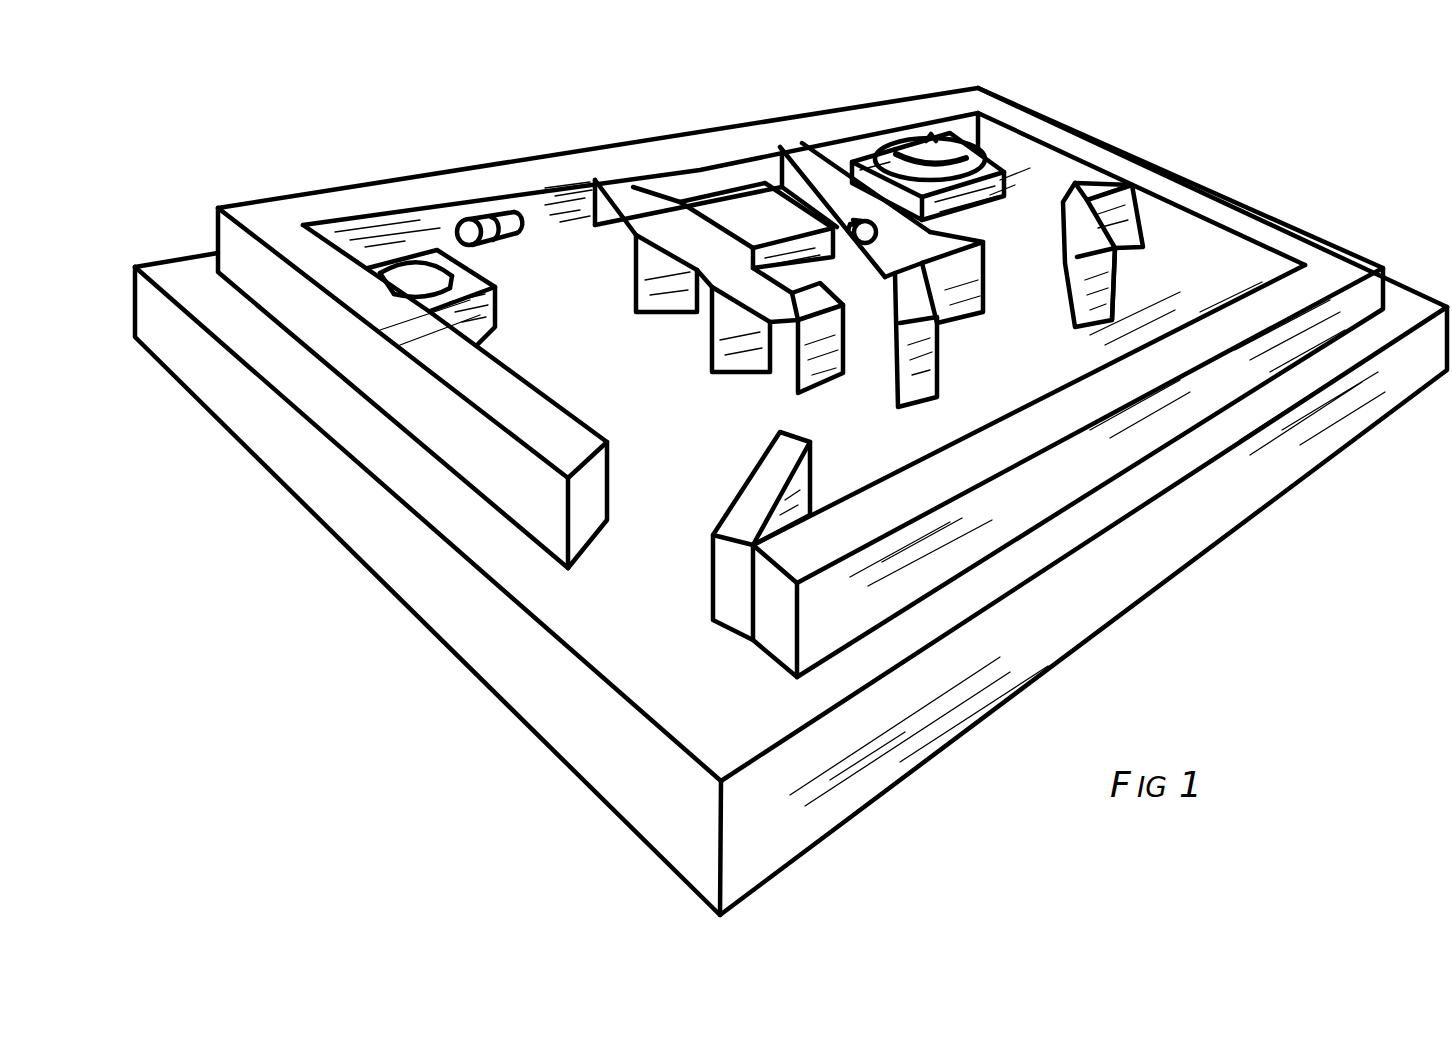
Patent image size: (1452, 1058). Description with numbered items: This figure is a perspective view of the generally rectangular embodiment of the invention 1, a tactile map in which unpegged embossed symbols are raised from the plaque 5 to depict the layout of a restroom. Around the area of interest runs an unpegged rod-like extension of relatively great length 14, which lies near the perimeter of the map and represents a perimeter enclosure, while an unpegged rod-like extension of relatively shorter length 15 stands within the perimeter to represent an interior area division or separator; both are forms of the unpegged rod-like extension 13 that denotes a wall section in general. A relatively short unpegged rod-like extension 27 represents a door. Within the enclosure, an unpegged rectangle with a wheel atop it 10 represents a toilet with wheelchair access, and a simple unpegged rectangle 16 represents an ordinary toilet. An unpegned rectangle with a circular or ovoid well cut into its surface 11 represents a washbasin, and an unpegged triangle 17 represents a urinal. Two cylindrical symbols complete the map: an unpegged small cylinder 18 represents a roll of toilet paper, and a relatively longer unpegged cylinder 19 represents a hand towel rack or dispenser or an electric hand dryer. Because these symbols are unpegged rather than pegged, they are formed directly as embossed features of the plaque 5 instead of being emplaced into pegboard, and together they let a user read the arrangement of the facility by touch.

The rectangular embodiment of the invention 1 is at (445, 660).
The plaque 5 is at (867, 303).
The unpegged rectangle with a wheel atop it 10 is at (943, 157).
The unpegged rectangle with a circular or ovoid well 11 is at (437, 260).
The unpegged rod-like extension 13 is at (490, 365).
The unpegged rod-like extension of relatively great length 14 is at (975, 455).
The unpegged rod-like extension of relatively shorter length 15 is at (1100, 228).
The simple unpegged rectangle 16 is at (655, 262).
The unpegged triangle 17 is at (585, 170).
The unpegged small cylinder 18 is at (770, 222).
The relatively longer unpegged cylinder 19 is at (458, 218).
The relatively short unpegged rod-like extension 27 is at (758, 492).